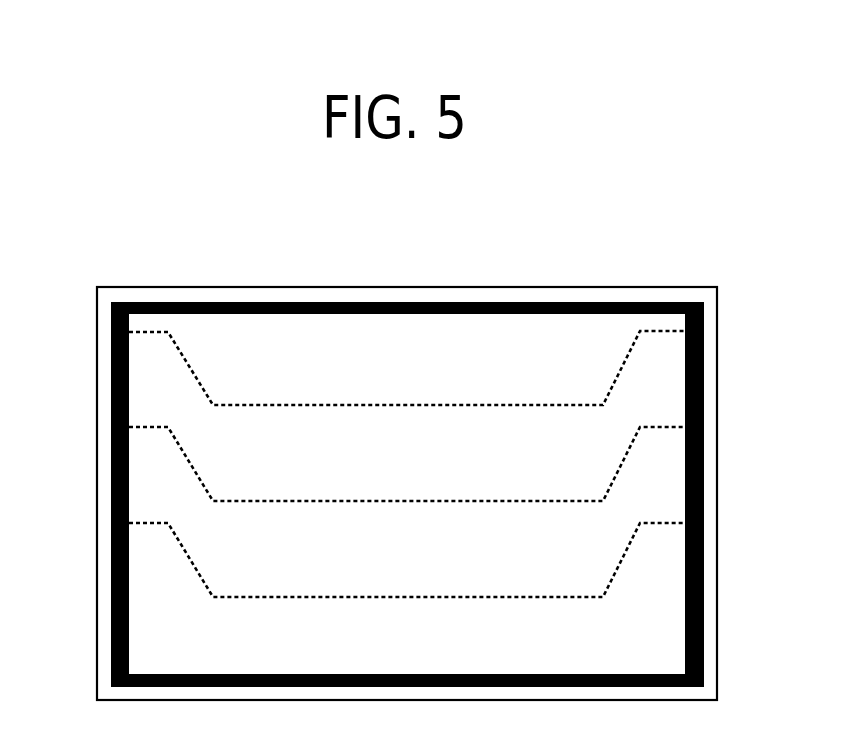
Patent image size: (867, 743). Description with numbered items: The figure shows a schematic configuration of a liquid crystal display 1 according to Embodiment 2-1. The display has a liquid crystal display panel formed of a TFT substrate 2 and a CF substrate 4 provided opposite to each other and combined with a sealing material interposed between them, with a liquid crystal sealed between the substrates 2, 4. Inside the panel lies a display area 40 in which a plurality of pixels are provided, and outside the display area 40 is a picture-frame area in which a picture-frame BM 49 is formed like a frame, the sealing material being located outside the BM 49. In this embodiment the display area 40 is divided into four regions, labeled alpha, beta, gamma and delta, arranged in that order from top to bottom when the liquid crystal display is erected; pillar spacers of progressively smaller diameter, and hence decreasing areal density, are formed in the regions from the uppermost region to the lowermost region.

The display device 1 is at (584, 240).
The TFT substrate 2 is at (407, 459).
The CF substrate 4 is at (657, 287).
The display area 40 is at (308, 340).
The picture-frame BM 49 is at (536, 302).